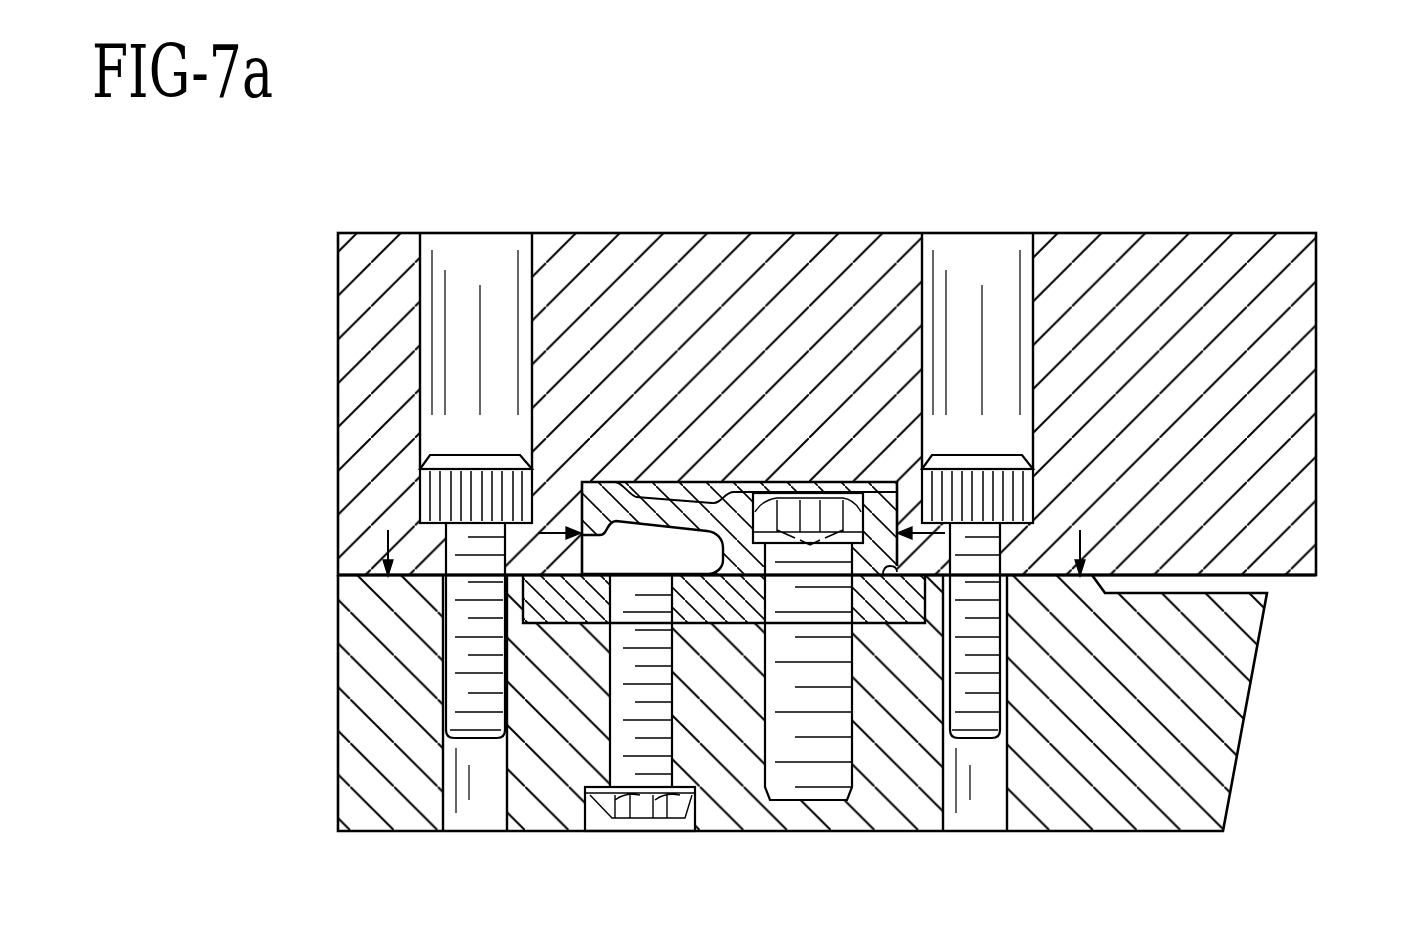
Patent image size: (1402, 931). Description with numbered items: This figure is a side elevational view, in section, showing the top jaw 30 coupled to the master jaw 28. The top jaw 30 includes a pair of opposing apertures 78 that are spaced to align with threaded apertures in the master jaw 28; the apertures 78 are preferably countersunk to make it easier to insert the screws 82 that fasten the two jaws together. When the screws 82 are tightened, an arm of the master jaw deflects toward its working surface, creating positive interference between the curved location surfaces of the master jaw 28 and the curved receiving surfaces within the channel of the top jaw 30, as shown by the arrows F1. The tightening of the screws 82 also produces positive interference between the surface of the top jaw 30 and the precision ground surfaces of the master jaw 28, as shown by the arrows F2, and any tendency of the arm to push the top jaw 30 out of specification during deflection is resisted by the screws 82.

The master jaw 28 is at (314, 761).
The top jaw 30 is at (318, 250).
The apertures 78 is at (420, 300).
The screws 82 is at (475, 455).
The arrows F1 is at (540, 533).
The arrows F2 is at (1345, 485).